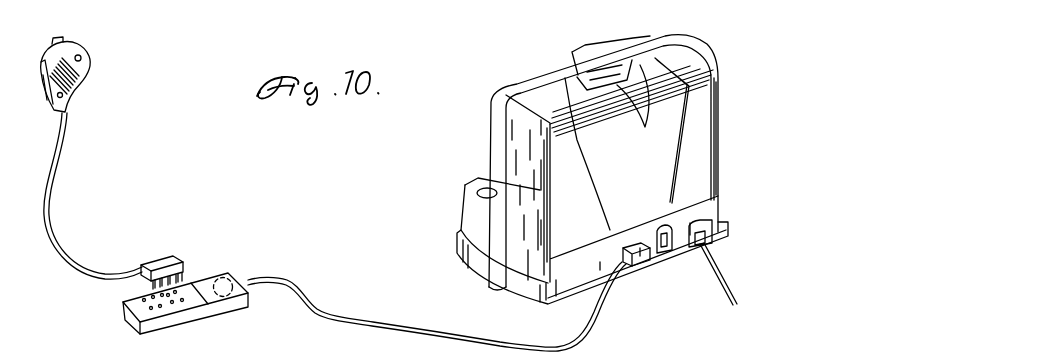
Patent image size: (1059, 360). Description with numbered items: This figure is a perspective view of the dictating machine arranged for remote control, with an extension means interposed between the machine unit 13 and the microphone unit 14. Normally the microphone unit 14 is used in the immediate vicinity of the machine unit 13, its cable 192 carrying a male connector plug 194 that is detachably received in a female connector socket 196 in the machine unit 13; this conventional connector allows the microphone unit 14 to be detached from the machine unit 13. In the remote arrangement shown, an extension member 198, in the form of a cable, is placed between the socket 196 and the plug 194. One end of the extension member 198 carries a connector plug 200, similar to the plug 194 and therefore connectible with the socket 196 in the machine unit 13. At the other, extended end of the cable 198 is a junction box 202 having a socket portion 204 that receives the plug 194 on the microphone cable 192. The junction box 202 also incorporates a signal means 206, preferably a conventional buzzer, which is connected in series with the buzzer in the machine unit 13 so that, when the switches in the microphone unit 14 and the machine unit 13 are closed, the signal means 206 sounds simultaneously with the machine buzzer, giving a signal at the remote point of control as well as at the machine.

The machine unit 13 is at (599, 161).
The microphone unit 14 is at (92, 52).
The cable 192 is at (57, 181).
The male connector plug 194 is at (176, 260).
The female connector socket 196 is at (633, 243).
The extension member 198 is at (356, 314).
The connector plug 200 is at (651, 261).
The junction box 202 is at (148, 328).
The socket portion 204 is at (123, 305).
The signal means 206 is at (237, 278).